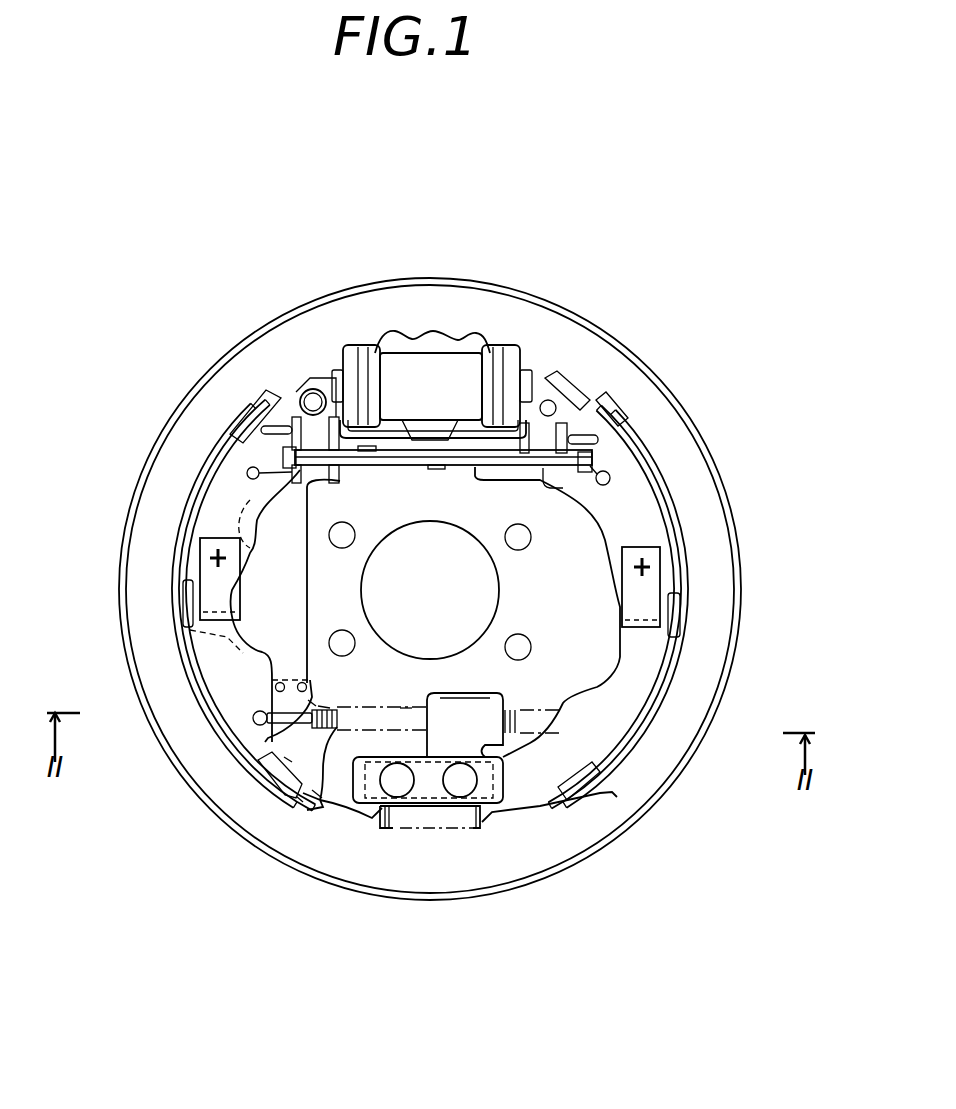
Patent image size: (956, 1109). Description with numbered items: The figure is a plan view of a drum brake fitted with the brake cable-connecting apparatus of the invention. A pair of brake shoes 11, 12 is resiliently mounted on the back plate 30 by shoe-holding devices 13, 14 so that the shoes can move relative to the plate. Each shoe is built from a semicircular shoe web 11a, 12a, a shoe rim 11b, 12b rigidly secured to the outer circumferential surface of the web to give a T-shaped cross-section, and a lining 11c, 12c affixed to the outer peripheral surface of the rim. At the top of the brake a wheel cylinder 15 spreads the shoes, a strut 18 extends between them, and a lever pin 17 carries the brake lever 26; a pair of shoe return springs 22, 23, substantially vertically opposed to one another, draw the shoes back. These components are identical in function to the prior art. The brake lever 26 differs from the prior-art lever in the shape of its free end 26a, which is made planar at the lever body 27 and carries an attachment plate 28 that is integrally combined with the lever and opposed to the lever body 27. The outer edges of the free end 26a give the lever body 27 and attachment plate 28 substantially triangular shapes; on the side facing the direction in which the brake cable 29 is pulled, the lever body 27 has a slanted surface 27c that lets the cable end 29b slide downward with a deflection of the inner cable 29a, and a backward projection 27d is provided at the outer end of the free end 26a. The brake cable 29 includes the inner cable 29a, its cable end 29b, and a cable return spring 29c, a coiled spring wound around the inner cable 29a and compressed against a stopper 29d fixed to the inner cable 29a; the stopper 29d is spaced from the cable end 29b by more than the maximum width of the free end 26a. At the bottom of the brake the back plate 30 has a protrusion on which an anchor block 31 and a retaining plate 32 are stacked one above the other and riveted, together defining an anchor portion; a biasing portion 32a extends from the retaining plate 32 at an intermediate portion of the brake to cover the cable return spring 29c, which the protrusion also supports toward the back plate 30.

The brake shoe 11 is at (184, 539).
The shoe web 11a is at (245, 425).
The shoe rim 11b is at (222, 452).
The lining 11c is at (212, 478).
The brake shoe 12 is at (690, 602).
The shoe web 12a is at (661, 647).
The shoe rim 12b is at (660, 700).
The lining 12c is at (643, 740).
The shoe-holding device 13 is at (200, 545).
The shoe-holding device 14 is at (655, 583).
The wheel cylinder 15 is at (398, 363).
The lever pin 17 is at (311, 390).
The strut 18 is at (443, 453).
The shoe return spring 22 is at (580, 393).
The shoe return spring 23 is at (402, 828).
The brake lever 26 is at (270, 536).
The free end 26a is at (258, 685).
The lever body 27 is at (300, 602).
The slanted surface 27c is at (300, 800).
The backward projection 27d is at (288, 762).
The attachment plate 28 is at (314, 708).
The brake cable 29 is at (300, 792).
The inner cable 29a is at (318, 796).
The cable end 29b is at (262, 724).
The cable return spring 29c is at (407, 710).
The stopper 29d is at (323, 708).
The back plate 30 is at (580, 872).
The anchor block 31 is at (488, 817).
The retaining plate 32 is at (465, 783).
The biasing portion 32a is at (493, 693).